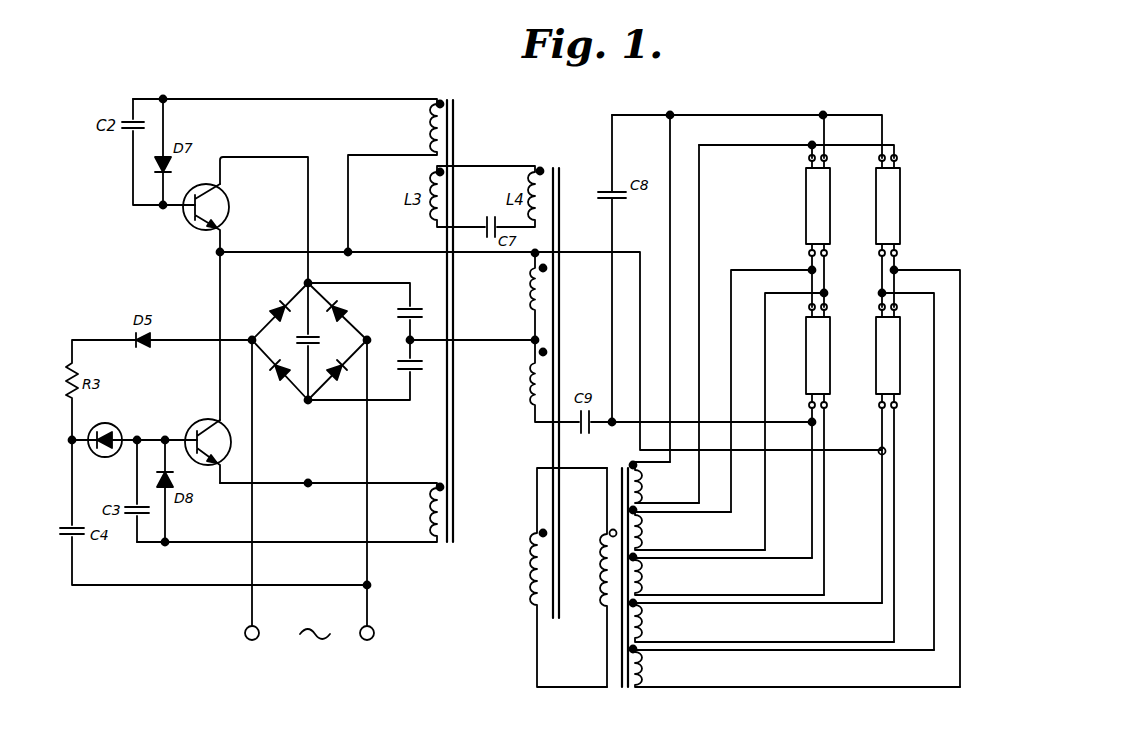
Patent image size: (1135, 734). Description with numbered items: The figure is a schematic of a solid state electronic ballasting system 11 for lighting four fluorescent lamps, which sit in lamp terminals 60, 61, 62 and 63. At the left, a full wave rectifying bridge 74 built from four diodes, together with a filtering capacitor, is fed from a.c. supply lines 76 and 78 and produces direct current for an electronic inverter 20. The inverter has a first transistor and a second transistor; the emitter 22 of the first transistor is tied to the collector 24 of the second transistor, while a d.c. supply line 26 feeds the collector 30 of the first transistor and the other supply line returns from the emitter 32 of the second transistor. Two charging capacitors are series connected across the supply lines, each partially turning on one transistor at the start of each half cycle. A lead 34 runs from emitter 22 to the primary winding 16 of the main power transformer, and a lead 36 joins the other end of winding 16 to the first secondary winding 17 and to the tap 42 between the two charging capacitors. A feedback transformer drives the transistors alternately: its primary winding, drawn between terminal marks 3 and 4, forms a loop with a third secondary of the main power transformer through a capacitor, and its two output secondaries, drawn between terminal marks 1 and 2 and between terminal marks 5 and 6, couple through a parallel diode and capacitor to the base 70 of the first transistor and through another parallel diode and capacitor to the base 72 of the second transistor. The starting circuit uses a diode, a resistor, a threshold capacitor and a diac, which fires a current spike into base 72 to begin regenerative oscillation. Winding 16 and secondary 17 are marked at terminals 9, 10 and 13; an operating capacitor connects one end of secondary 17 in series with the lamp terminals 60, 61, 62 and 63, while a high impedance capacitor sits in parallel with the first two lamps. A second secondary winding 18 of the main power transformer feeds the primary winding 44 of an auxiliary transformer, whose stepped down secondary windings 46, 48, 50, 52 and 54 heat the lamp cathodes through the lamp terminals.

The solid state electronic ballasting system 11 is at (432, 642).
The primary winding 16 is at (530, 295).
The first secondary winding 17 is at (530, 394).
The second secondary winding 18 is at (529, 579).
The electronic inverter 20 is at (255, 86).
The emitter 22 is at (226, 243).
The collector 24 is at (220, 418).
The d.c. supply line 26 is at (318, 281).
The collector 30 is at (214, 166).
The emitter 32 is at (222, 472).
The lead 34 is at (399, 226).
The lead 36 is at (468, 342).
The tap 42 is at (408, 339).
The primary winding 44 is at (605, 592).
The secondary winding 46 is at (648, 488).
The secondary winding 48 is at (650, 536).
The secondary winding 50 is at (652, 581).
The secondary winding 52 is at (652, 626).
The secondary winding 54 is at (652, 671).
The lamp terminal 60 is at (802, 162).
The lamp terminal 61 is at (808, 311).
The lamp terminal 62 is at (902, 162).
The lamp terminal 63 is at (876, 311).
The base 70 is at (178, 210).
The base 72 is at (181, 432).
The full wave rectifying bridge 74 is at (284, 288).
The a.c. supply line 76 is at (248, 613).
The a.c. supply line 78 is at (370, 612).
The winding terminal 1 is at (430, 103).
The winding terminal 2 is at (430, 148).
The winding terminal 3 is at (462, 176).
The winding terminal 4 is at (462, 220).
The winding terminal 5 is at (425, 491).
The winding terminal 6 is at (425, 535).
The winding terminal 9 is at (528, 261).
The winding terminal 10 is at (526, 330).
The winding terminal 13 is at (523, 419).